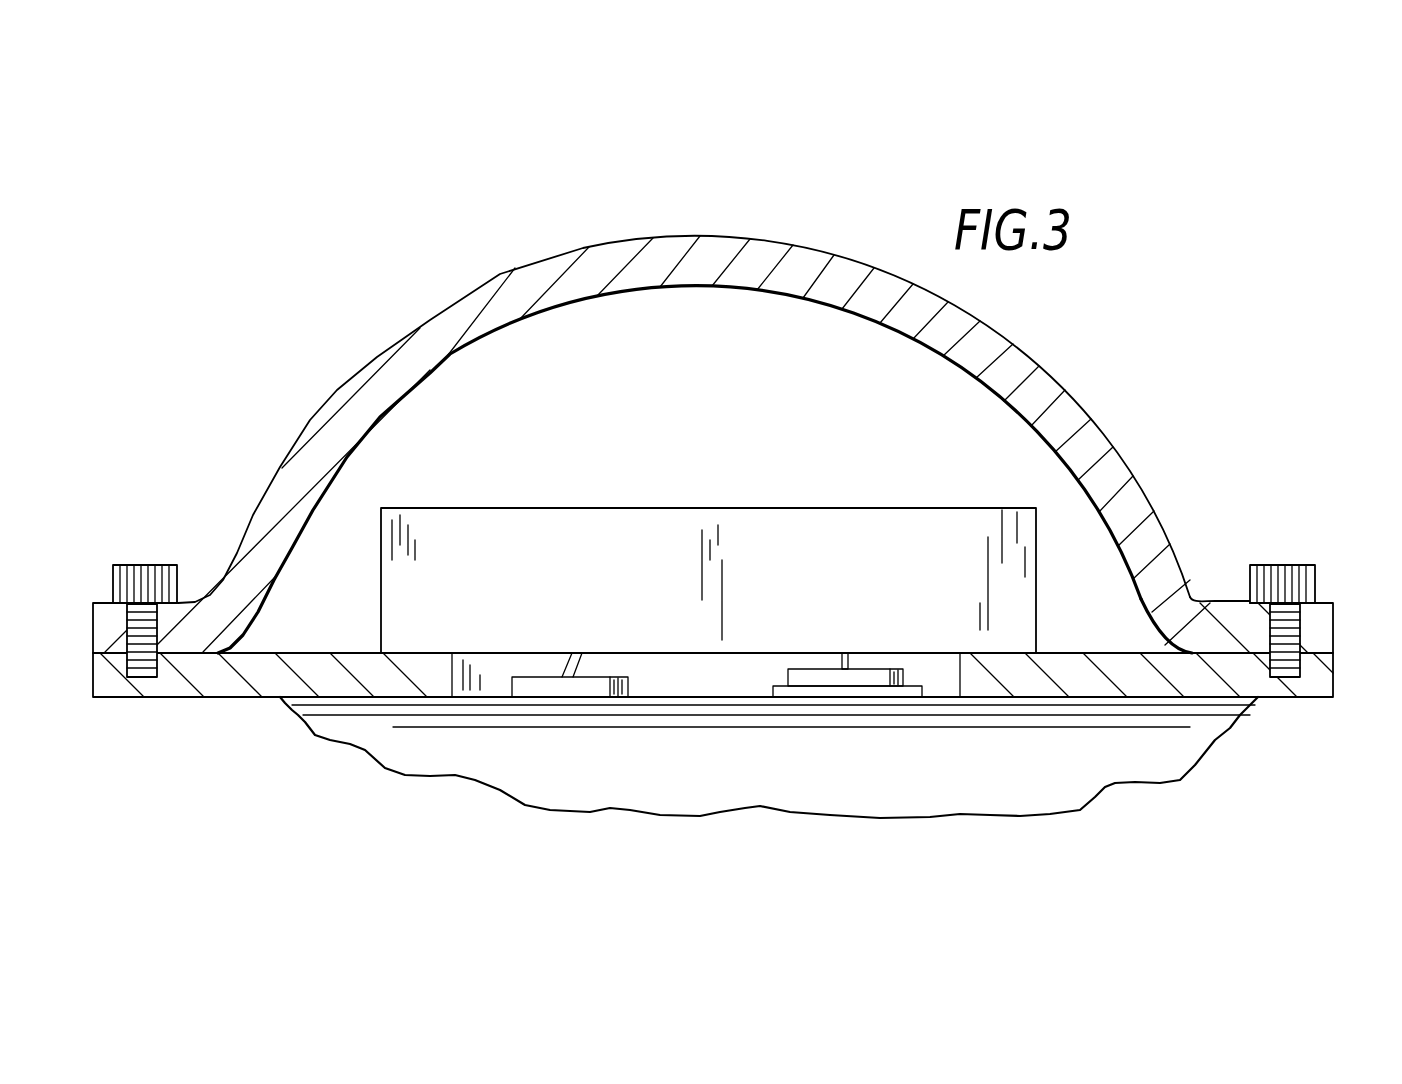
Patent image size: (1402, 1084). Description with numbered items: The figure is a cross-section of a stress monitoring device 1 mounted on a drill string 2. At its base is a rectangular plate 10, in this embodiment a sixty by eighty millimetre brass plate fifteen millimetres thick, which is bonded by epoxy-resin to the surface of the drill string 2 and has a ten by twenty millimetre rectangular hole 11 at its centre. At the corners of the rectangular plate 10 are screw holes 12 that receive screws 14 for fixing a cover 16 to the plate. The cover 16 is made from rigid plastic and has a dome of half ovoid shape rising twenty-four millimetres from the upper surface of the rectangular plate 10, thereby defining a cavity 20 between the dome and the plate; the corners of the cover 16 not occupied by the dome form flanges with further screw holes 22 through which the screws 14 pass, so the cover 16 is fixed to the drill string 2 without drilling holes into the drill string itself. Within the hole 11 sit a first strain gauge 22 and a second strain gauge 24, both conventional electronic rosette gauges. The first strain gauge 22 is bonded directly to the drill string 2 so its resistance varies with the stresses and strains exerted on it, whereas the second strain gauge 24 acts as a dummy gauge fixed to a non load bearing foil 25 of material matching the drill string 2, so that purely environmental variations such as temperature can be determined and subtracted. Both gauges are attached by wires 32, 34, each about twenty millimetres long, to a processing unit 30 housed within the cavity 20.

The stress monitoring device 1 is at (345, 335).
The drill string 2 is at (372, 737).
The rectangular plate 10 is at (217, 682).
The rectangular hole 11 is at (722, 670).
The screw holes 12 is at (120, 663).
The screws 14 is at (131, 567).
The cover 16 is at (447, 300).
The cavity 20 is at (712, 350).
The first strain gauge 22 is at (130, 627).
The second strain gauge 24 is at (882, 678).
The foil 25 is at (833, 693).
The processing unit 30 is at (655, 520).
The wire 32 is at (562, 672).
The wire 34 is at (840, 662).